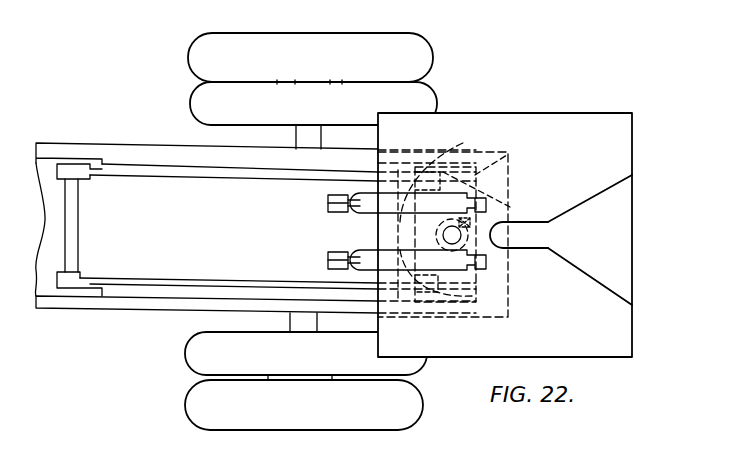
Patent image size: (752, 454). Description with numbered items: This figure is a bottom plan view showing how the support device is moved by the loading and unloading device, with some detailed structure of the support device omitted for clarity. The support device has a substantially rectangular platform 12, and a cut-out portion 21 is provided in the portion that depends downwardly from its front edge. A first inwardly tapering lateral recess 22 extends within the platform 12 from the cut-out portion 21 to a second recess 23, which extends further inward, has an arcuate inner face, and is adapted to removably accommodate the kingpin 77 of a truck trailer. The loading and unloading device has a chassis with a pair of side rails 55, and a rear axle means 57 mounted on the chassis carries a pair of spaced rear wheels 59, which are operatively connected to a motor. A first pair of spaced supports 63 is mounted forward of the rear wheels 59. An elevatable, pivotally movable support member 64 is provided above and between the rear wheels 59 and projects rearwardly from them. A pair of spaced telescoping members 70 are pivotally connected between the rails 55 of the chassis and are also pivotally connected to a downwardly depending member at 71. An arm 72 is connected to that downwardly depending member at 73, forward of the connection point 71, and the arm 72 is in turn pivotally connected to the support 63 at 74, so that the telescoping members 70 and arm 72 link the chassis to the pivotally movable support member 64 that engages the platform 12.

The platform 12 is at (568, 334).
The cut-out portion 21 is at (632, 227).
The first inwardly tapering lateral recess 22 is at (575, 260).
The second recess 23 is at (537, 221).
The side rails 55 is at (190, 145).
The rear axle means 57 is at (292, 321).
The rear wheels 59 is at (432, 58).
The spaced supports 63 is at (75, 160).
The elevatable pivotally movable support member 64 is at (512, 145).
The telescoping members 70 is at (352, 214).
The pivotal connection 71 is at (486, 262).
The arm 72 is at (190, 174).
The connection point 73 is at (445, 160).
The pivotal connection 74 is at (78, 240).
The kingpin 77 is at (482, 205).